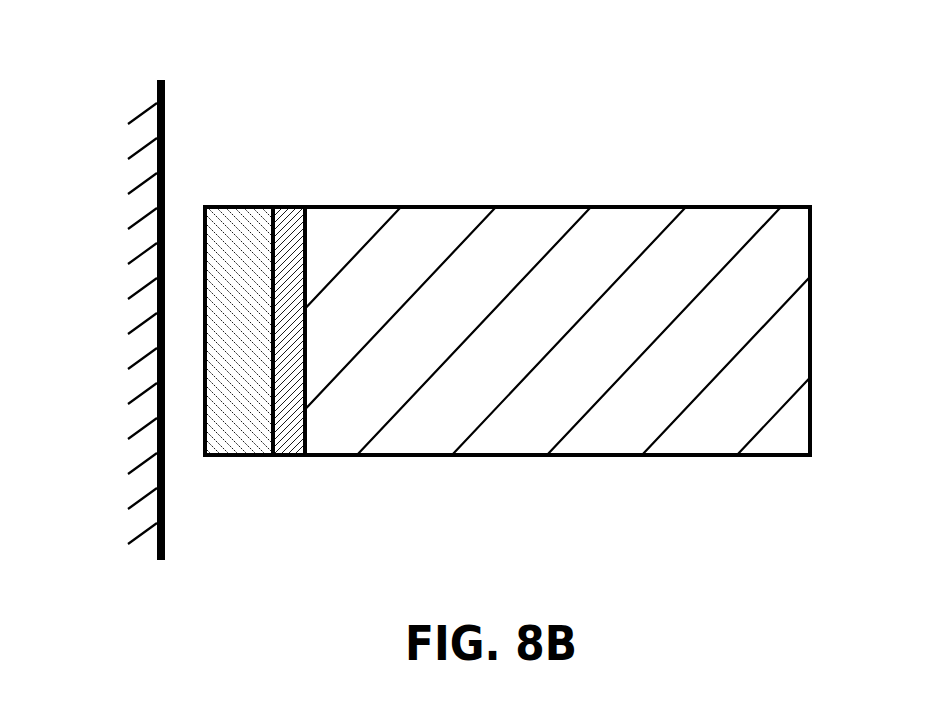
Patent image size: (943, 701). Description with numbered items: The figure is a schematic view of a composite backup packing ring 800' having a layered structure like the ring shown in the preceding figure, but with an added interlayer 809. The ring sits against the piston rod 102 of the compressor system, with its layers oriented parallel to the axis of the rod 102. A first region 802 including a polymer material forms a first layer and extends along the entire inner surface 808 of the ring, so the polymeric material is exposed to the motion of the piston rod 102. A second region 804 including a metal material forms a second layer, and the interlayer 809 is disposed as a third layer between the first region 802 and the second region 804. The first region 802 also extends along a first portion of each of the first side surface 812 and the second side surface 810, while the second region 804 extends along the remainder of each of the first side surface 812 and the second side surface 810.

The piston rod 102 is at (151, 341).
The composite backup packing ring 800' is at (486, 304).
The first region 802 is at (228, 288).
The second region 804 is at (512, 327).
The inner surface 808 is at (205, 402).
The interlayer 809 is at (287, 223).
The second side surface 810 is at (460, 455).
The first side surface 812 is at (477, 207).